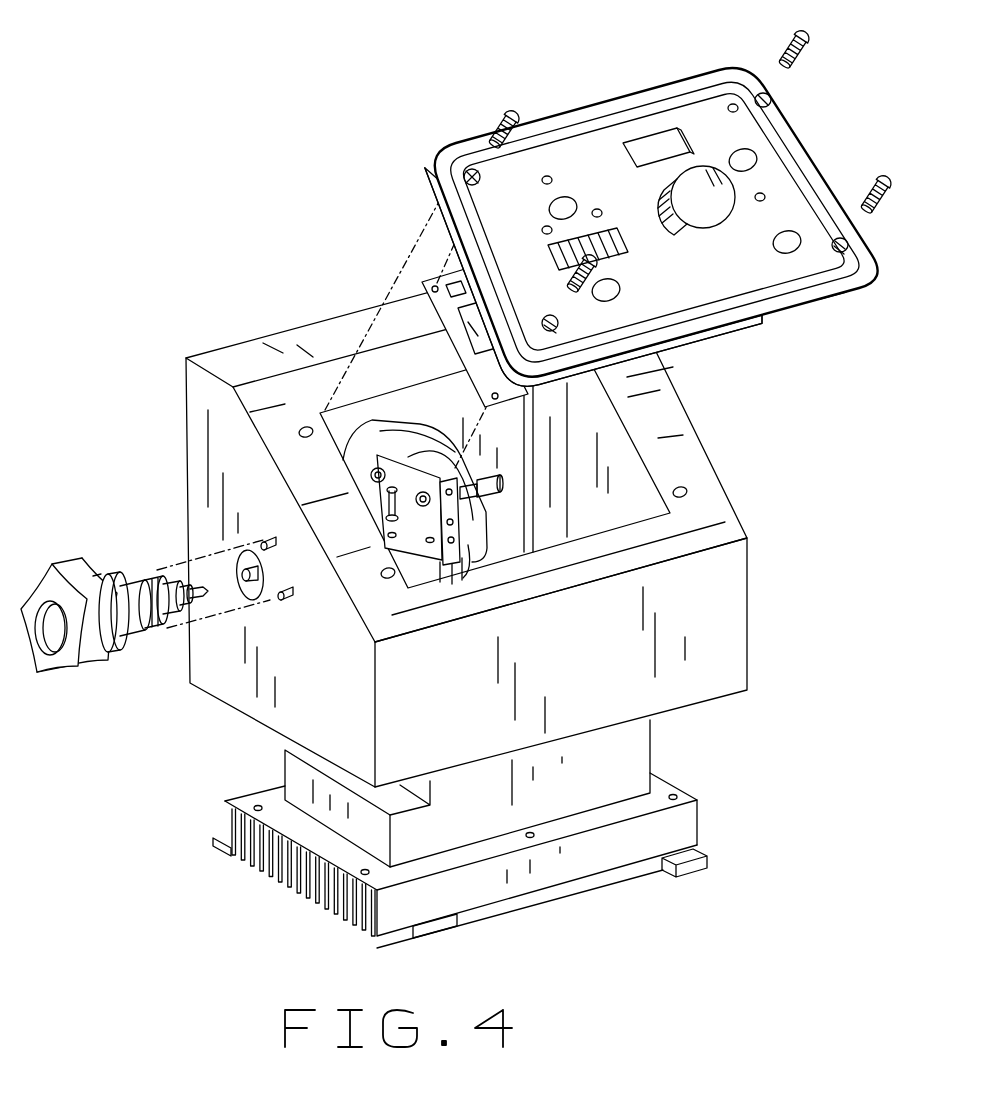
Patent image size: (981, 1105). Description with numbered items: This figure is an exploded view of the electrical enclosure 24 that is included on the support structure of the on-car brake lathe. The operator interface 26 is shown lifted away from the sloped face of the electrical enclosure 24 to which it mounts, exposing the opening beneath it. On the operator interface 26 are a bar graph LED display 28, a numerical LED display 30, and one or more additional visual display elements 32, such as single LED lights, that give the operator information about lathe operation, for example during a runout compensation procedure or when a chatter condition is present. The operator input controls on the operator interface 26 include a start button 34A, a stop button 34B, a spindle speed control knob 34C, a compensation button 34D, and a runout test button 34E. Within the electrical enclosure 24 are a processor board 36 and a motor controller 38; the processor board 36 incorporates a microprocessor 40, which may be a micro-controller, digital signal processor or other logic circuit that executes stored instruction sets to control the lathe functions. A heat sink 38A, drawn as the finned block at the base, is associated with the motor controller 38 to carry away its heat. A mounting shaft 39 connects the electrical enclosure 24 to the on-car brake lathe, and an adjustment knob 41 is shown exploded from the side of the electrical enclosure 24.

The electrical enclosure 24 is at (677, 467).
The operator interface 26 is at (793, 164).
The bar graph LED display 28 is at (548, 246).
The numerical LED display 30 is at (643, 152).
The visual display element 32 is at (547, 228).
The start button 34A is at (750, 158).
The stop button 34B is at (832, 295).
The spindle speed control knob 34C is at (787, 250).
The compensation button 34D is at (563, 208).
The runout test button 34E is at (608, 293).
The processor board 36 is at (440, 310).
The motor controller 38 is at (617, 762).
The heat sink 38A is at (304, 893).
The mounting shaft 39 is at (325, 411).
The microprocessor 40 is at (430, 357).
The adjustment knob 41 is at (58, 680).